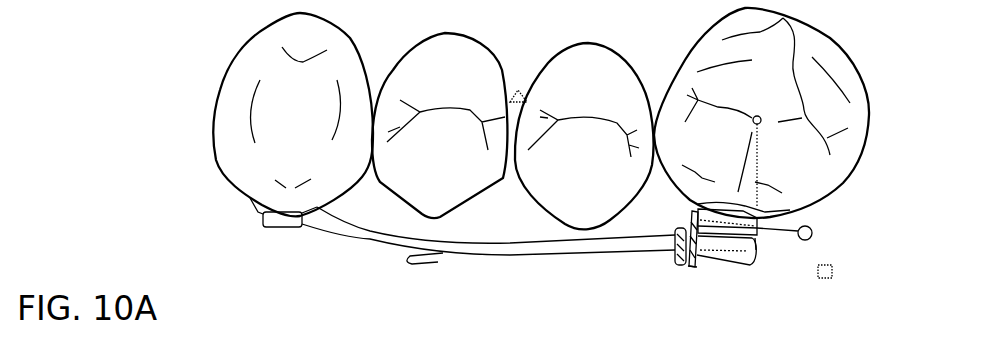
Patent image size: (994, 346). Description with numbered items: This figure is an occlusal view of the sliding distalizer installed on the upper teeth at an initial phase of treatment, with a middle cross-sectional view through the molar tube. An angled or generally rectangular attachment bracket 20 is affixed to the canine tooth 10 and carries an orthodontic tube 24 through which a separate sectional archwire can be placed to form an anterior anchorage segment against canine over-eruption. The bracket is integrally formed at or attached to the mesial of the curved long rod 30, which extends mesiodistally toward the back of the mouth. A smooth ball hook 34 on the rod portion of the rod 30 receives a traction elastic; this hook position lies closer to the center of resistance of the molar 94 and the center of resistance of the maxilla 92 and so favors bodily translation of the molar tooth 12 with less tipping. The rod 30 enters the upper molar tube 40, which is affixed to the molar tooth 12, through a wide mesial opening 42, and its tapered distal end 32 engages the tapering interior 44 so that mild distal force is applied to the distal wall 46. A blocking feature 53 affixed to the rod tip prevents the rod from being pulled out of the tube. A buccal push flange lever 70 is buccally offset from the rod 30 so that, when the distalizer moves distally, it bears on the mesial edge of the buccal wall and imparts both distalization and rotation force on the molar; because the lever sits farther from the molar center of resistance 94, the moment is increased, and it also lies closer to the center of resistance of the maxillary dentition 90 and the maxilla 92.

The canine tooth 10 is at (240, 124).
The molar tooth 12 is at (835, 165).
The attachment bracket 20 is at (257, 210).
The orthodontic tube 24 is at (288, 227).
The long rod 30 is at (368, 242).
The tapered distal end 32 is at (692, 267).
The ball hook 34 is at (443, 255).
The upper molar tube 40 is at (745, 222).
The opening 42 is at (691, 221).
The interior 44 is at (738, 257).
The distal wall 46 is at (757, 240).
The blocking feature 53 is at (812, 233).
The buccal push flange lever 70 is at (674, 253).
The center of resistance of the maxillary dentition 90 is at (518, 90).
The center of resistance of the maxilla 92 is at (826, 286).
The center of resistance of the molar 94 is at (757, 150).